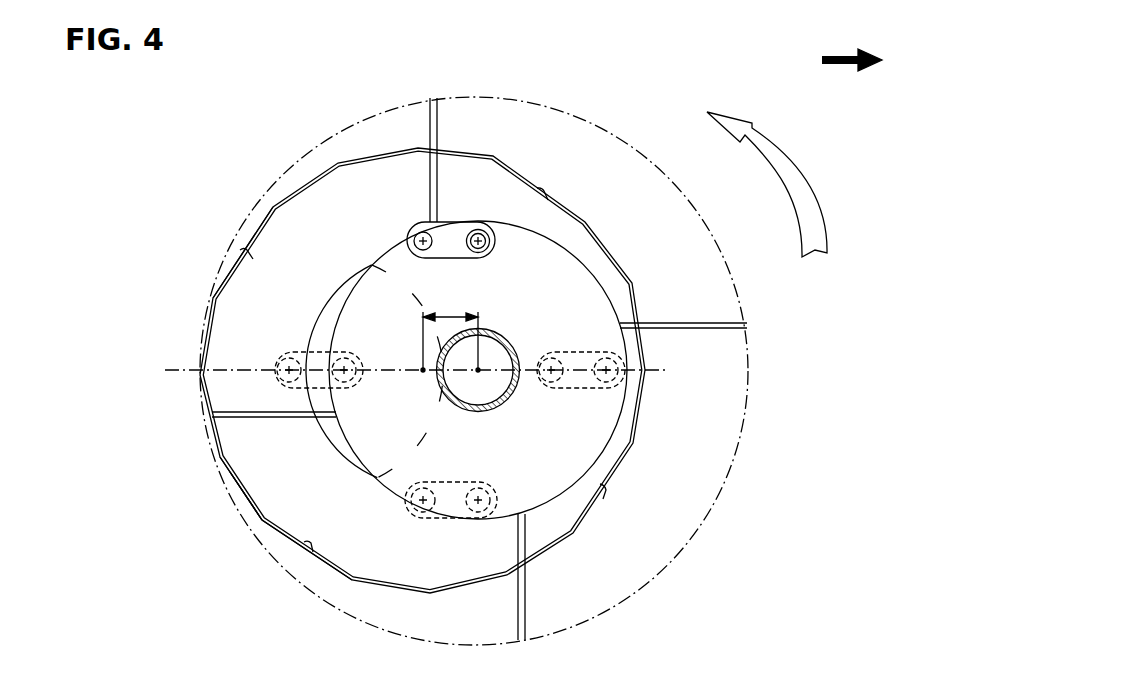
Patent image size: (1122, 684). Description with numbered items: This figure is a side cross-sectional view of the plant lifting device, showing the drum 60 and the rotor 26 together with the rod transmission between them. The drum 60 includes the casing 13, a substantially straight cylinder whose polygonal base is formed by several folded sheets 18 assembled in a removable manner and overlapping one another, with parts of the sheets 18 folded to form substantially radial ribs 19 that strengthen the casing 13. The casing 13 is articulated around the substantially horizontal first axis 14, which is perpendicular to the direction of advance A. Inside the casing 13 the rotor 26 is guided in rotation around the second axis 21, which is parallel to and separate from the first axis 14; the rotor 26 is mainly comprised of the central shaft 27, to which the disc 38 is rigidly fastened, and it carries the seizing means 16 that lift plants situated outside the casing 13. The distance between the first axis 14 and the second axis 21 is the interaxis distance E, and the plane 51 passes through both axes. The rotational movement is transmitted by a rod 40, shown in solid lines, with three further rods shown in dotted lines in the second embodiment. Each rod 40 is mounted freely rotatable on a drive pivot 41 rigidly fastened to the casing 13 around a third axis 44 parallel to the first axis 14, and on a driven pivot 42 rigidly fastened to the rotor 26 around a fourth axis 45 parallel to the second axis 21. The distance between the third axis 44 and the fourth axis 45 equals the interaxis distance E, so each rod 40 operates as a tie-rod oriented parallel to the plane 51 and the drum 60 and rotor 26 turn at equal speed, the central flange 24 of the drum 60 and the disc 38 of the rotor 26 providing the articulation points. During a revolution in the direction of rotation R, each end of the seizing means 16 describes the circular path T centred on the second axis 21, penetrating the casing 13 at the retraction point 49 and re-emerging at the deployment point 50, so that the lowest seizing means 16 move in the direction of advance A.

The casing 13 is at (527, 172).
The first axis 14 is at (423, 372).
The seizing means 16 is at (723, 327).
The sheet 18 is at (265, 528).
The radial rib 19 is at (310, 543).
The second axis 21 is at (478, 372).
The central flange 24 is at (308, 504).
The rotor 26 is at (568, 503).
The central shaft 27 is at (516, 386).
The disc 38 is at (401, 318).
The rod 40 is at (447, 227).
The drive pivot 41 is at (420, 240).
The driven pivot 42 is at (482, 242).
The third axis 44 is at (423, 240).
The fourth axis 45 is at (480, 240).
The retraction point 49 is at (225, 270).
The deployment point 50 is at (232, 475).
The plane 51 is at (190, 365).
The drum 60 is at (236, 494).
The path T is at (738, 447).
The interaxis distance E is at (450, 305).
The direction of advance A is at (852, 48).
The direction of rotation R is at (767, 184).